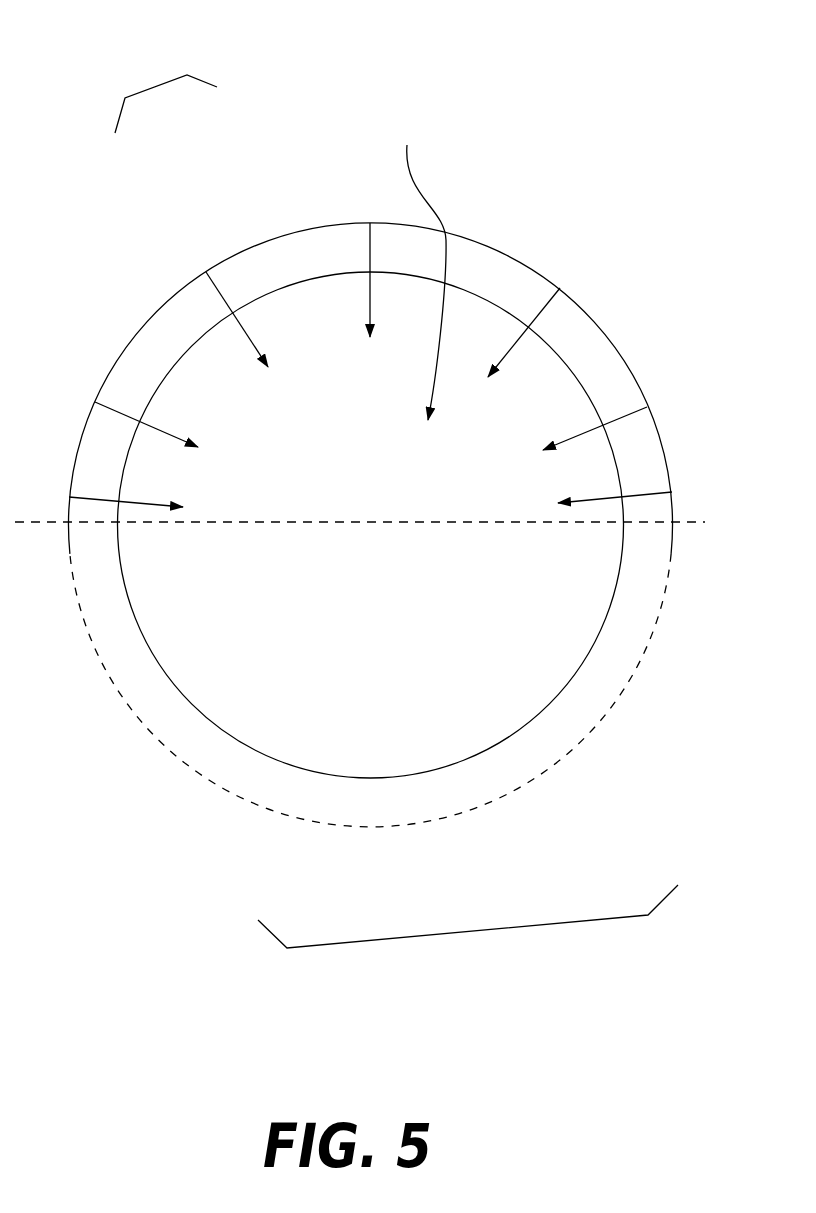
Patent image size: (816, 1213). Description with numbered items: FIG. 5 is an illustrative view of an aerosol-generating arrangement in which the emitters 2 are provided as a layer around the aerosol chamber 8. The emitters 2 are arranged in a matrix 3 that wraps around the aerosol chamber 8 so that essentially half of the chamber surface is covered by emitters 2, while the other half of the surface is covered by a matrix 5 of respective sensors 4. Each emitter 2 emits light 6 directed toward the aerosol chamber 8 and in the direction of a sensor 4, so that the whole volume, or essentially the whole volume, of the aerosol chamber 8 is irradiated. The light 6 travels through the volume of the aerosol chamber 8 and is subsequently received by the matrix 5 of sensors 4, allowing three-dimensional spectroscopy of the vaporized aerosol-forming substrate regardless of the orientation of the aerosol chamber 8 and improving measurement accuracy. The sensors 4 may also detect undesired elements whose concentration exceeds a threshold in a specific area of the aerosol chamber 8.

The emitter 2 is at (243, 245).
The matrix of emitters 3 is at (158, 85).
The sensor 4 is at (298, 817).
The matrix of sensors 5 is at (415, 938).
The light 6 is at (128, 412).
The aerosol chamber 8 is at (426, 269).